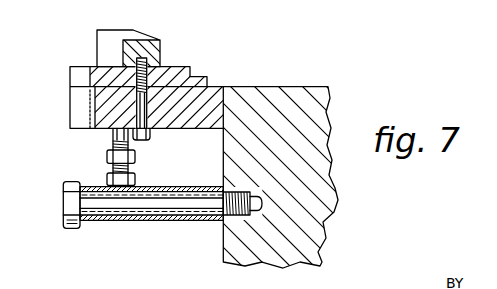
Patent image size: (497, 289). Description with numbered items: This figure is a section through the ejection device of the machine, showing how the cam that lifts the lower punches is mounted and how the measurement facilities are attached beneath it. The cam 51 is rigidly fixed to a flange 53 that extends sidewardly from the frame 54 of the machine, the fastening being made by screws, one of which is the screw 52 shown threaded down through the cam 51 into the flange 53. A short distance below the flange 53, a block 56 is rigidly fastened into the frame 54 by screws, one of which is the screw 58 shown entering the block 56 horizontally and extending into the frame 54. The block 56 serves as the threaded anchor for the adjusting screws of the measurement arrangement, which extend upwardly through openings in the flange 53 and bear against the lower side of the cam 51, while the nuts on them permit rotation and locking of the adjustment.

The cam 51 is at (161, 52).
The screw 52 is at (132, 64).
The flange 53 is at (213, 88).
The frame 54 is at (268, 88).
The block 56 is at (157, 186).
The screw 58 is at (69, 183).